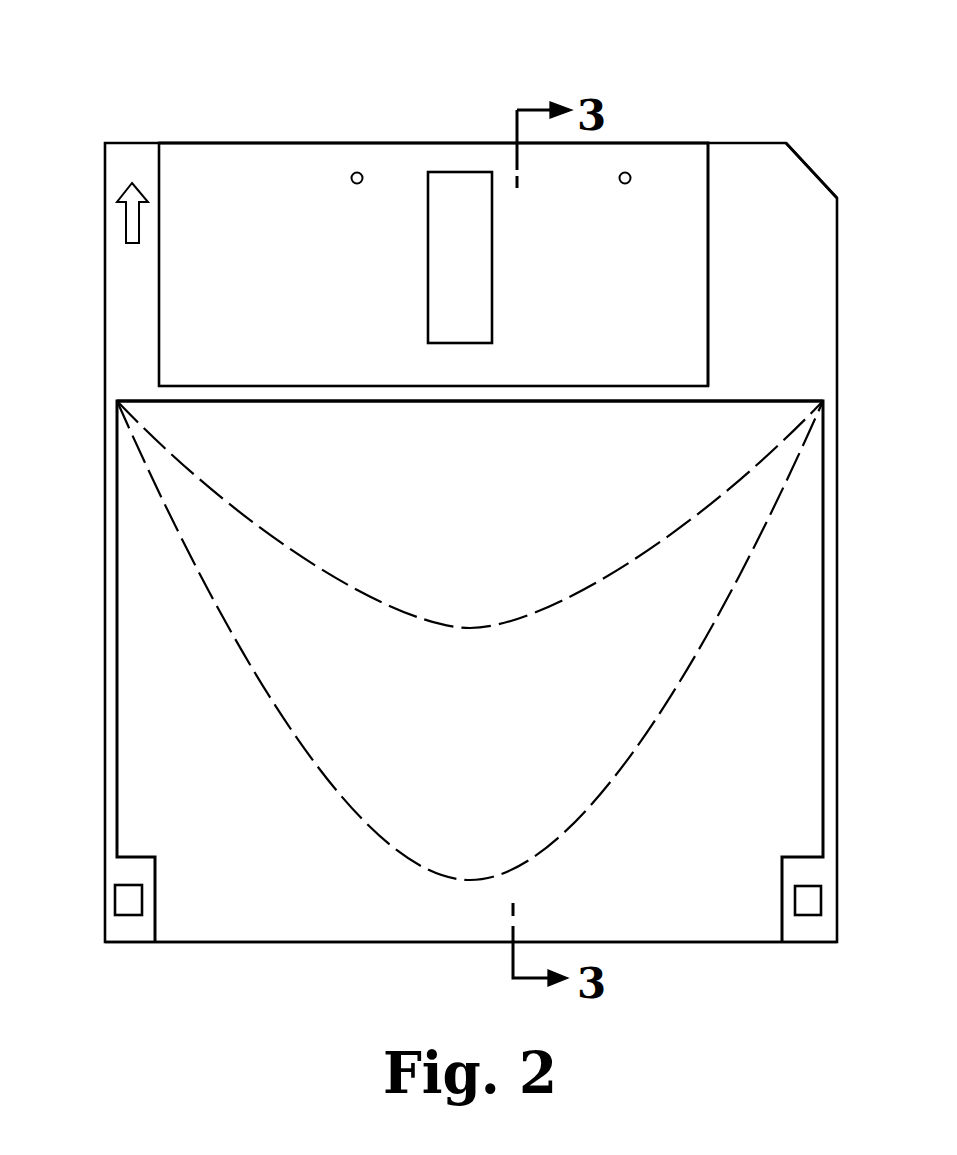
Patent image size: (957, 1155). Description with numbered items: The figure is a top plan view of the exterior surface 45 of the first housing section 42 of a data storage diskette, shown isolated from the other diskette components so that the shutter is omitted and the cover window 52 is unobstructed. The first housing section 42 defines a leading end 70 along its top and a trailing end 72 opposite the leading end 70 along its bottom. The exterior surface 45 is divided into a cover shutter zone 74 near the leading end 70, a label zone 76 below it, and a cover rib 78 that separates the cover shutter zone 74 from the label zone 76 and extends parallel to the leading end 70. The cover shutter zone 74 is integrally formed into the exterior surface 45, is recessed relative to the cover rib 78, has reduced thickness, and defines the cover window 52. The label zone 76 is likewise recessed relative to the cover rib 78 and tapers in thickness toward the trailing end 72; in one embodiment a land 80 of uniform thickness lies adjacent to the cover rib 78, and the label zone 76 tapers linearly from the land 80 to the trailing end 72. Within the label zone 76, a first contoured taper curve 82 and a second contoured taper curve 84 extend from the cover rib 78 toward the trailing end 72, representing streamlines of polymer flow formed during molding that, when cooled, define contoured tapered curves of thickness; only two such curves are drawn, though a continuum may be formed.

The first housing section 42 is at (120, 80).
The exterior surface 45 is at (783, 194).
The cover window 52 is at (428, 212).
The leading end 70 is at (205, 143).
The trailing end 72 is at (233, 943).
The cover shutter zone 74 is at (658, 185).
The label zone 76 is at (773, 713).
The cover rib 78 is at (300, 397).
The land 80 is at (513, 404).
The first contoured taper curve 82 is at (508, 626).
The second contoured taper curve 84 is at (305, 772).